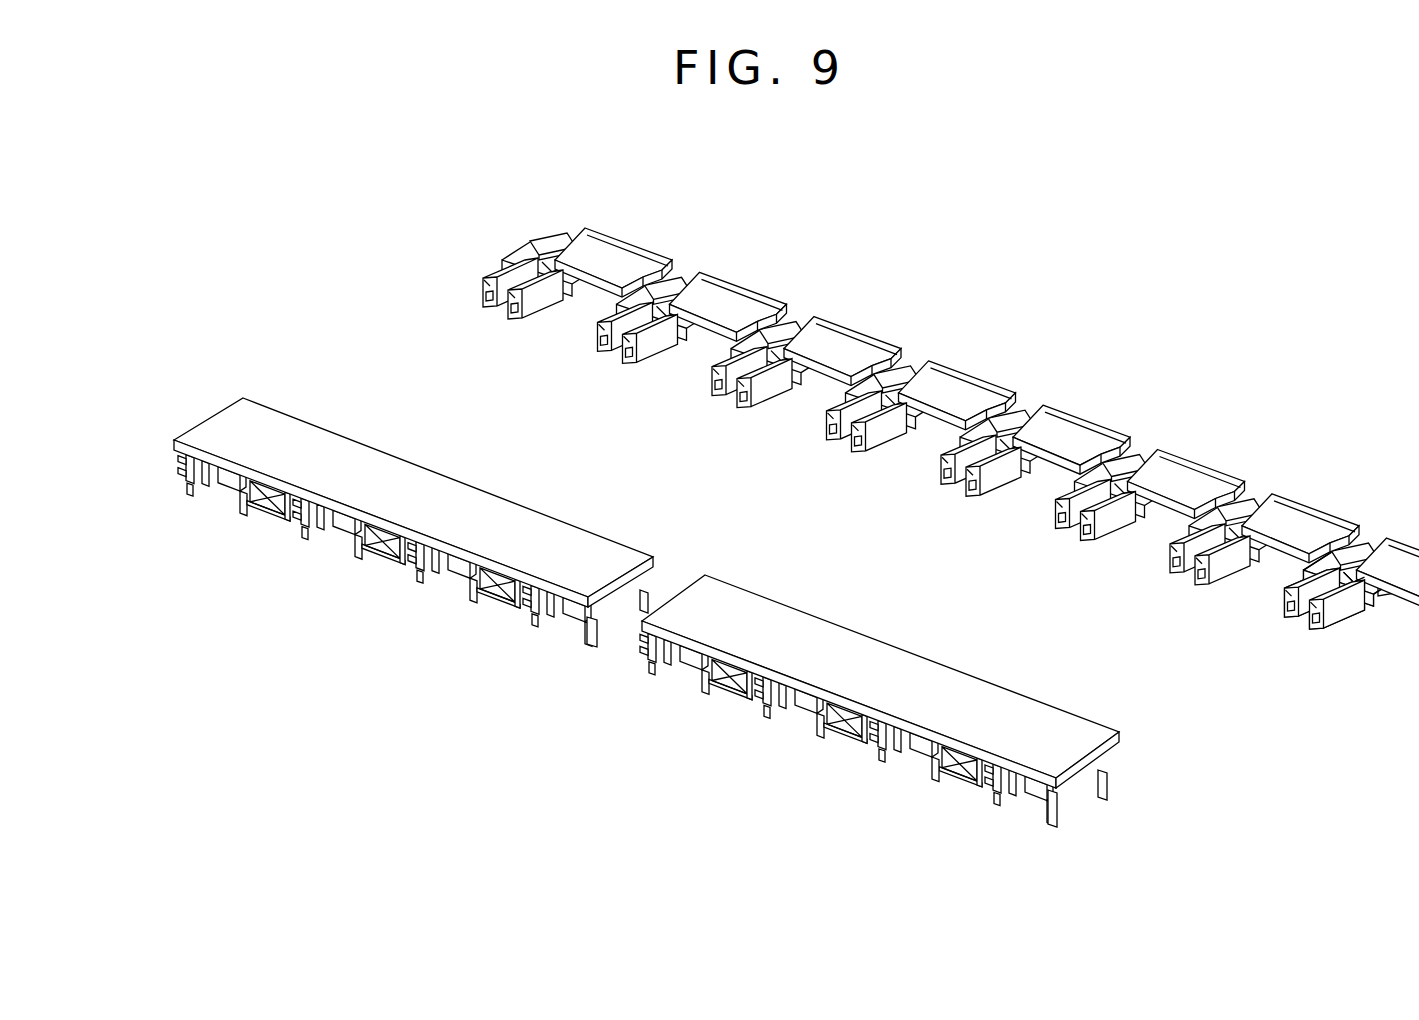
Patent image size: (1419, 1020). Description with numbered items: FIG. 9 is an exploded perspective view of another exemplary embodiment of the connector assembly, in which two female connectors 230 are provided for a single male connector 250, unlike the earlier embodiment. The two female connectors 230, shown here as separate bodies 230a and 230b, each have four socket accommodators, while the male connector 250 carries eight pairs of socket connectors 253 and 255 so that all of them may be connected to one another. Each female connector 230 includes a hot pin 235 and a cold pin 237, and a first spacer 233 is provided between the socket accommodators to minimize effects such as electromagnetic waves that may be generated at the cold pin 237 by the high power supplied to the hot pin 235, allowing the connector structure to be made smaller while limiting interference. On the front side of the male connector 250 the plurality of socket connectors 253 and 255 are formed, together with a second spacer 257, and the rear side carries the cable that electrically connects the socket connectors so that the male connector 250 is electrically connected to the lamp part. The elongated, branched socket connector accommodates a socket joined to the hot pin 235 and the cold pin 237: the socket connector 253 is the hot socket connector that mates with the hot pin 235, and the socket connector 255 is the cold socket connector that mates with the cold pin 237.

The male connector 250 is at (909, 450).
The hot socket connector 253 is at (522, 318).
The cold socket connector 255 is at (483, 305).
The second spacer 257 is at (585, 297).
The female connector 230 is at (606, 628).
The first housing segment 230a is at (570, 520).
The second housing segment 230b is at (828, 627).
The first spacer 233 is at (235, 487).
The hot pin 235 is at (185, 487).
The cold pin 237 is at (272, 507).